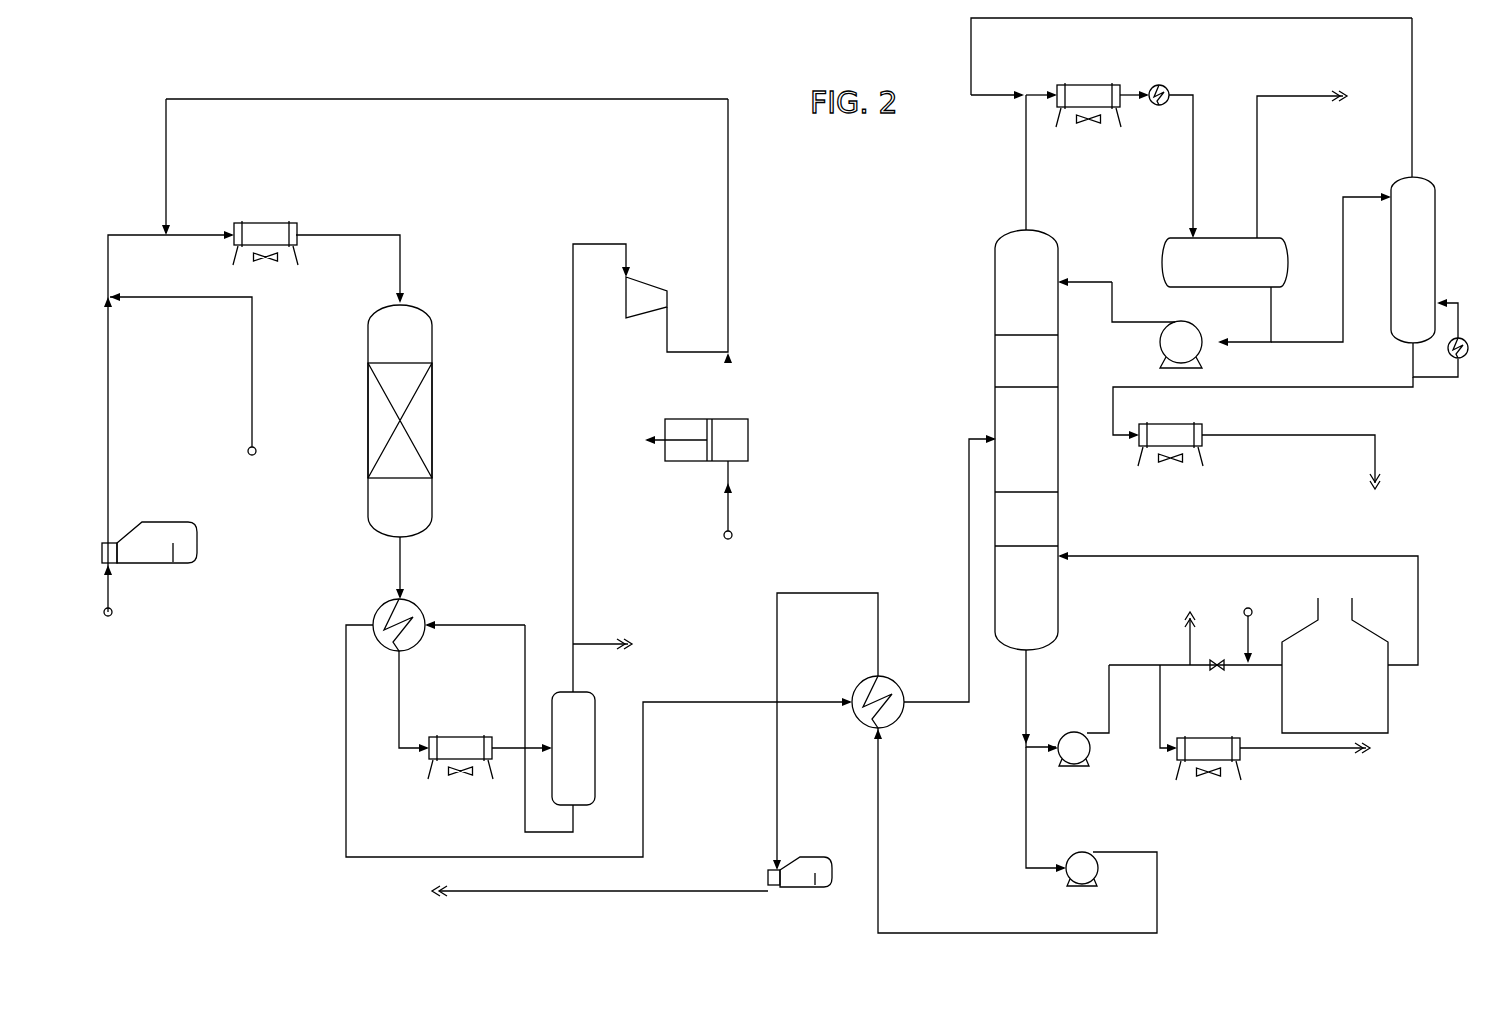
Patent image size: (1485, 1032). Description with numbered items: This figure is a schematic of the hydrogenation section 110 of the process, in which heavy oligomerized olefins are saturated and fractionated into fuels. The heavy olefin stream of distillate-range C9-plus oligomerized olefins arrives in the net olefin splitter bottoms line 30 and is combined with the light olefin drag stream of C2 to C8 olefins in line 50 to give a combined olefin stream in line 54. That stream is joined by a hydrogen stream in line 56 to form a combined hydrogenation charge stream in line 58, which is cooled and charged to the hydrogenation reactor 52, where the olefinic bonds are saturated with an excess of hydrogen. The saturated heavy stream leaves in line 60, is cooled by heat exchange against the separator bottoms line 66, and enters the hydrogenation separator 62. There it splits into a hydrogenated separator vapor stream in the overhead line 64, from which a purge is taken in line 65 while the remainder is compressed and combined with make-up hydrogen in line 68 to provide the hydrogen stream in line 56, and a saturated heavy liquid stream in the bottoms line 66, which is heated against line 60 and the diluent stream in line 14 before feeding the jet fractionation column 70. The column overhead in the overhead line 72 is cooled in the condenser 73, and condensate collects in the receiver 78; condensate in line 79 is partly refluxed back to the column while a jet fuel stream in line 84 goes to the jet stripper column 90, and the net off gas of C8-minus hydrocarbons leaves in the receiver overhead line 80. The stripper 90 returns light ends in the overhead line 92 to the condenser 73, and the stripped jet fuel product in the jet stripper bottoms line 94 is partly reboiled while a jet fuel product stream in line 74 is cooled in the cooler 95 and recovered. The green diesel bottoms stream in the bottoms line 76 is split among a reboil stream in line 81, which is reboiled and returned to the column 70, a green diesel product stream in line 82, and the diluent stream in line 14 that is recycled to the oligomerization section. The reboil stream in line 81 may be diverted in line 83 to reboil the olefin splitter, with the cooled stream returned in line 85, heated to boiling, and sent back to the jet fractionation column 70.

The hydrogenation section 110 is at (233, 60).
The diluent stream line 14 is at (880, 785).
The net olefin splitter bottoms line 30 is at (108, 593).
The light olefin drag stream line 50 is at (252, 370).
The hydrogenation reactor 52 is at (433, 352).
The combined olefin stream line 54 is at (108, 248).
The hydrogen stream line 56 is at (166, 142).
The combined hydrogenation charge stream line 58 is at (193, 235).
The hydrogenation reactor discharge line 60 is at (400, 565).
The hydrogenation separator 62 is at (592, 758).
The hydrogenation separator overhead line 64 is at (575, 657).
The purge line 65 is at (593, 642).
The hydrogenation separator bottoms line 66 is at (522, 787).
The make-up hydrogen line 68 is at (728, 380).
The jet fractionation column 70 is at (995, 297).
The jet fractionation overhead line 72 is at (1027, 160).
The condenser 73 is at (1087, 82).
The net liquid overhead line 74 is at (1263, 387).
The net bottoms line 76 is at (1026, 665).
The jet fractionation receiver 78 is at (1287, 248).
The condensate line 79 is at (1273, 295).
The receiver overhead line 80 is at (1257, 132).
The reboil stream line 81 is at (1140, 665).
The green diesel product stream line 82 is at (1160, 683).
The diverted reboil line 83 is at (1187, 643).
The jet fuel stream line 84 is at (1343, 230).
The cooled reboil return line 85 is at (1250, 637).
The jet stripper column 90 is at (1403, 175).
The jet stripper overhead line 92 is at (1412, 65).
The jet stripper bottoms line 94 is at (1410, 367).
The cooler 95 is at (1160, 423).